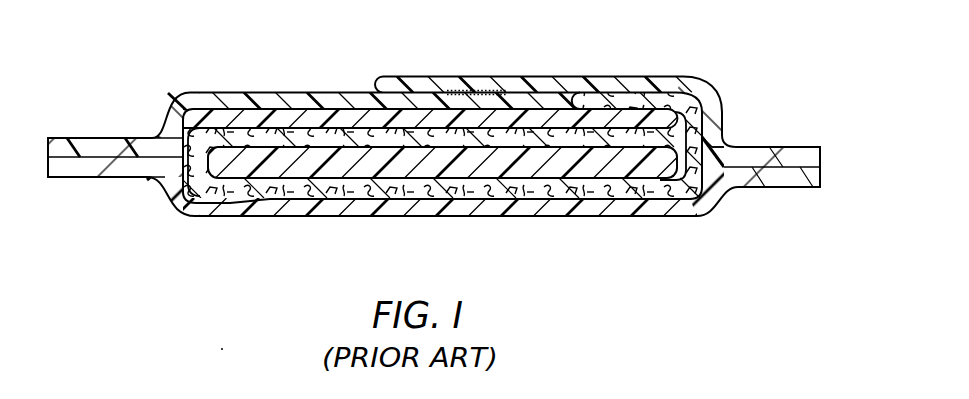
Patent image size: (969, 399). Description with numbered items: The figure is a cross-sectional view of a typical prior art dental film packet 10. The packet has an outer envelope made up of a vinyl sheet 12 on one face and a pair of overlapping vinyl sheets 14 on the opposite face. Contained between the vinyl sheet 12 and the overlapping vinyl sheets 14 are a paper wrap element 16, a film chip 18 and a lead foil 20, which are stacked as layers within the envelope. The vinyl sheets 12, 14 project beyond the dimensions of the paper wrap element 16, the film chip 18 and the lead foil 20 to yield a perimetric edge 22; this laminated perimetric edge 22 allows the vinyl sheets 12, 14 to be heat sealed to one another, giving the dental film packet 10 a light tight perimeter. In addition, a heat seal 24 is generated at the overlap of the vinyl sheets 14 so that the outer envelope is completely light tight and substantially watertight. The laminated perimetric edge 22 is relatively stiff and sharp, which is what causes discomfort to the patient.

The dental film packet 10 is at (442, 138).
The vinyl sheet 12 is at (610, 219).
The overlapping vinyl sheets 14 is at (267, 91).
The paper wrap element 16 is at (292, 198).
The film chip 18 is at (432, 170).
The lead foil 20 is at (332, 108).
The perimetric edge 22 is at (88, 138).
The heat seal 24 is at (475, 92).